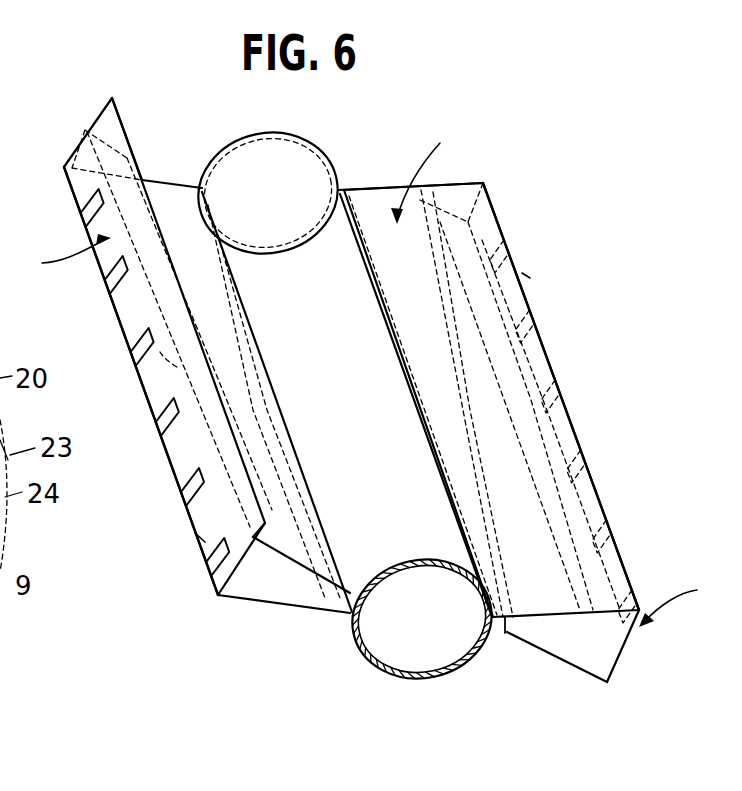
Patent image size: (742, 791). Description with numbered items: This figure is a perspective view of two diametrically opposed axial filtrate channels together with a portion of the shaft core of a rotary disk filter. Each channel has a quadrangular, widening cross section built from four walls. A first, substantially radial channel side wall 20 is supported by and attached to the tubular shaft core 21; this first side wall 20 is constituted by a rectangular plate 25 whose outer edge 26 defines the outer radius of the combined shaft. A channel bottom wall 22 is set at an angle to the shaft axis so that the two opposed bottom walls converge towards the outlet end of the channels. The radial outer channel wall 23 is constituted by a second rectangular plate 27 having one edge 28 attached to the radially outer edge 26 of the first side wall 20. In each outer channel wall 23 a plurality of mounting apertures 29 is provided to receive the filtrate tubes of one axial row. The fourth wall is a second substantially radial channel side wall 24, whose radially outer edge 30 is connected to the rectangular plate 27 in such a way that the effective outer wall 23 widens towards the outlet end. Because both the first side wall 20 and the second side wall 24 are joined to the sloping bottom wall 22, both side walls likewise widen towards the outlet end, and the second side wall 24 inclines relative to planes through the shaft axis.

The first channel side wall 20 is at (540, 598).
The tubular shaft core 21 is at (363, 662).
The channel bottom wall 22 is at (333, 590).
The radial outer channel wall 23 is at (617, 638).
The second channel side wall 24 is at (573, 643).
The rectangular plate 25 is at (430, 170).
The outer edge 26 is at (545, 342).
The rectangular plate 27 is at (371, 430).
The edge 28 is at (522, 273).
The mounting apertures 29 is at (142, 343).
The radially outer edge 30 is at (580, 510).